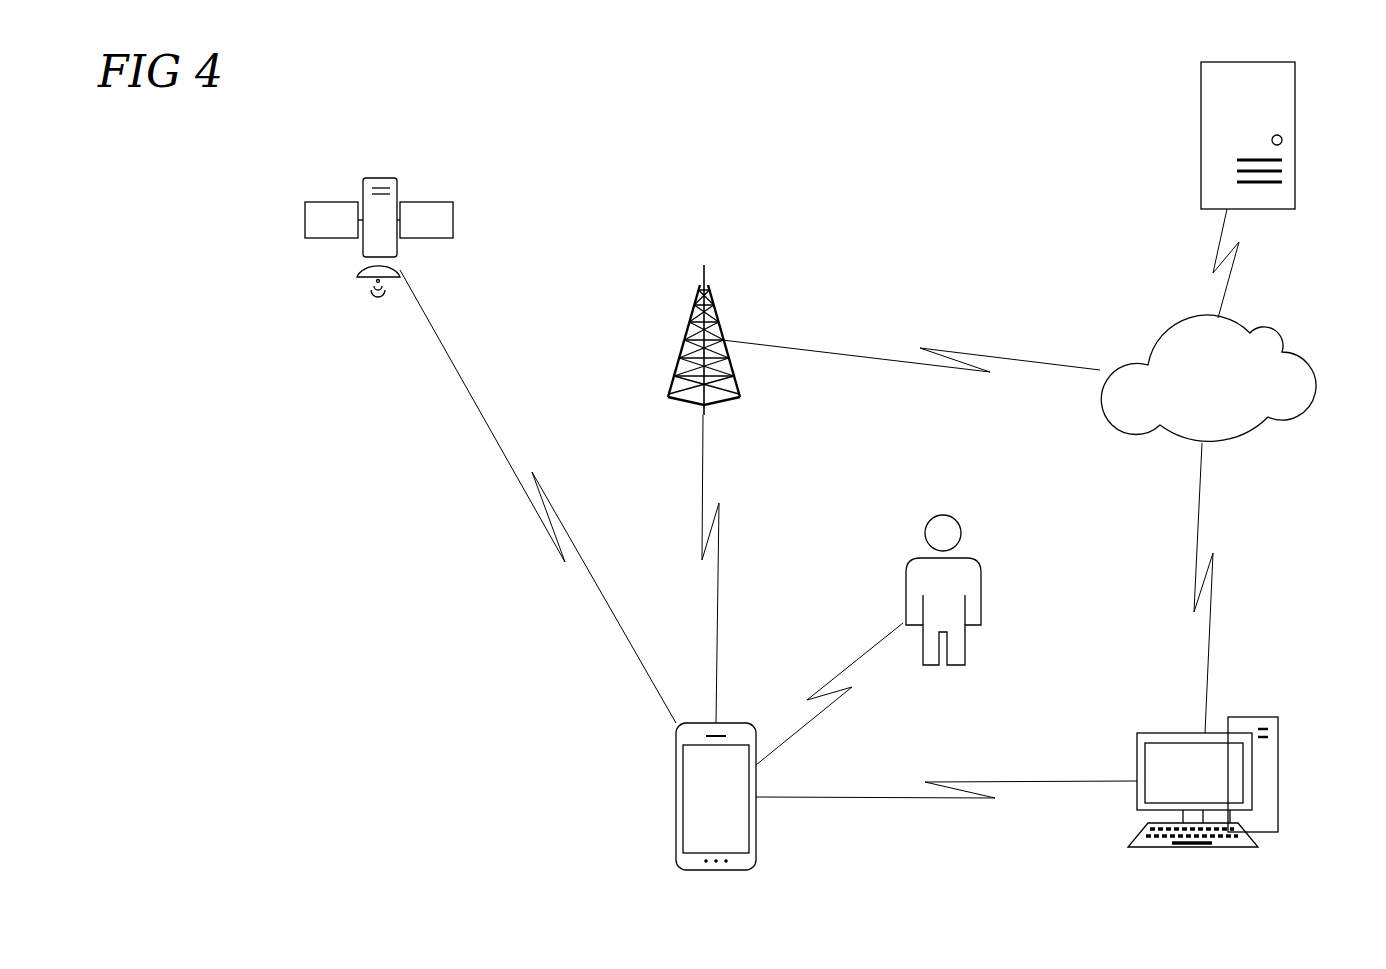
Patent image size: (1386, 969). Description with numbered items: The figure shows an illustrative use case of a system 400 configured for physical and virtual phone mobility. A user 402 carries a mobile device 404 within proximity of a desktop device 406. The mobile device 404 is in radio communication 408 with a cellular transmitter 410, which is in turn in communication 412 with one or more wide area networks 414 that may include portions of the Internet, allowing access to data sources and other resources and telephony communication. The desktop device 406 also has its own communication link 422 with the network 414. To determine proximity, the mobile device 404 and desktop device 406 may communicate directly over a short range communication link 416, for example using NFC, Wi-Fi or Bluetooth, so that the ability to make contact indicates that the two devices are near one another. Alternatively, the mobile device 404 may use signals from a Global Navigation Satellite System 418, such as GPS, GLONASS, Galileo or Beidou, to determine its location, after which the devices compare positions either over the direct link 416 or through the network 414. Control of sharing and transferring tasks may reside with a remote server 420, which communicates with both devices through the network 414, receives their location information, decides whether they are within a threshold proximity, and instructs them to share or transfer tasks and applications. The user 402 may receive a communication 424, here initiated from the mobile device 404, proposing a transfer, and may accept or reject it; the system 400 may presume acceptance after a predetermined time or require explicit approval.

The system 400 is at (801, 177).
The user 402 is at (981, 572).
The mobile device 404 is at (676, 800).
The desktop device 406 is at (1278, 765).
The radio communication 408 is at (727, 556).
The cellular transmitter 410 is at (690, 312).
The communication 412 is at (930, 340).
The wide area networks 414 is at (1176, 325).
The short range communication link 416 is at (967, 778).
The Global Navigation Satellite System 418 is at (305, 204).
The remote server 420 is at (1295, 90).
The communication link 422 is at (1222, 565).
The communication 424 is at (820, 685).